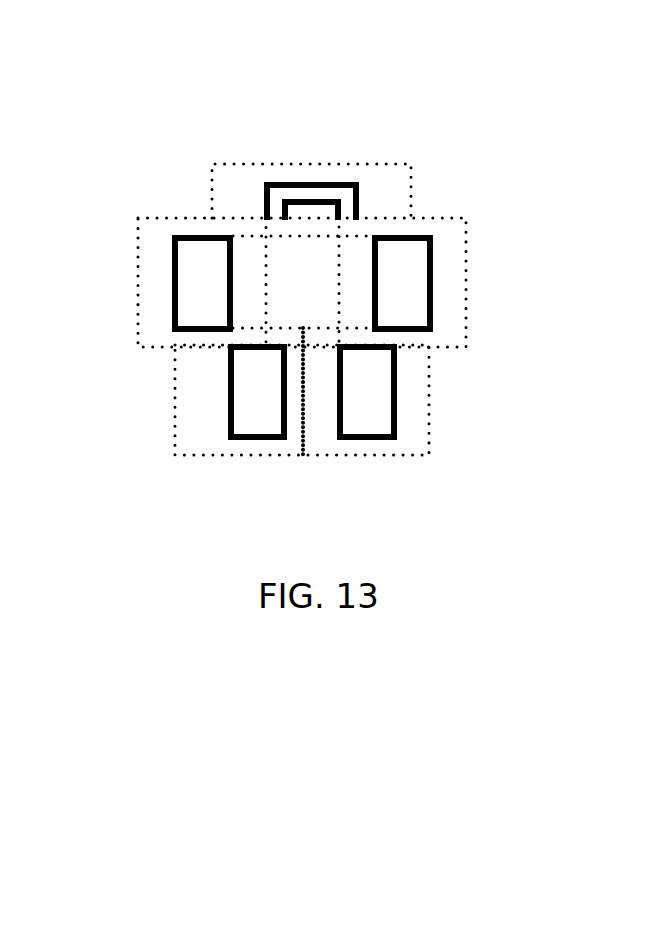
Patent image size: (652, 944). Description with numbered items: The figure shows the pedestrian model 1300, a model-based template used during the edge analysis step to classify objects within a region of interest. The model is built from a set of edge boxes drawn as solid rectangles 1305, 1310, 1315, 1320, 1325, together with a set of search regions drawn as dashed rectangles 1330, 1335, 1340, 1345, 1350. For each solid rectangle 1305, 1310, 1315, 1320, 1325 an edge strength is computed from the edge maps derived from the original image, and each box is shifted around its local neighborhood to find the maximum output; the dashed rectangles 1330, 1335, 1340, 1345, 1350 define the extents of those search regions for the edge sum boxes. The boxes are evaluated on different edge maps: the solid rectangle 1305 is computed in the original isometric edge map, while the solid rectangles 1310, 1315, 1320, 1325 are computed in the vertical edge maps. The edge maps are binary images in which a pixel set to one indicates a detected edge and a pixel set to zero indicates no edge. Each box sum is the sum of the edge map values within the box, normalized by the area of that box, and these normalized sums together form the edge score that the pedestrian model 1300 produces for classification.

The pedestrian model 1300 is at (564, 163).
The solid rectangle 1305 is at (302, 182).
The solid rectangle 1310 is at (435, 267).
The solid rectangle 1315 is at (363, 430).
The solid rectangle 1320 is at (253, 430).
The solid rectangle 1325 is at (172, 287).
The dashed rectangle 1330 is at (375, 157).
The dashed rectangle 1335 is at (470, 317).
The dashed rectangle 1340 is at (425, 437).
The dashed rectangle 1345 is at (175, 420).
The dashed rectangle 1350 is at (138, 250).